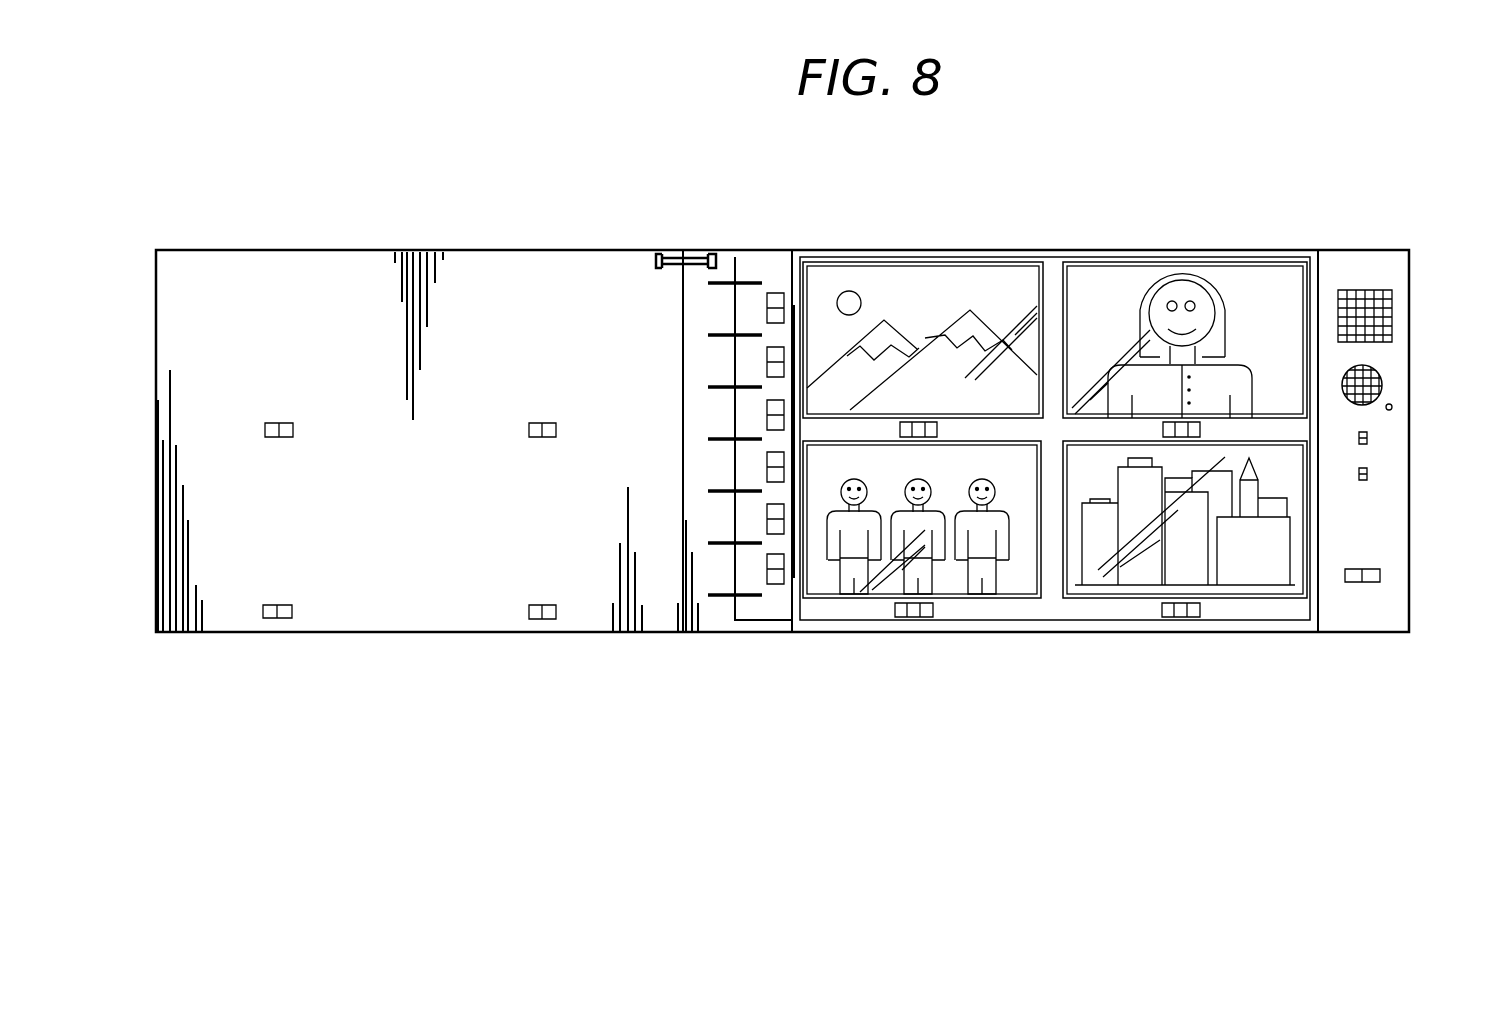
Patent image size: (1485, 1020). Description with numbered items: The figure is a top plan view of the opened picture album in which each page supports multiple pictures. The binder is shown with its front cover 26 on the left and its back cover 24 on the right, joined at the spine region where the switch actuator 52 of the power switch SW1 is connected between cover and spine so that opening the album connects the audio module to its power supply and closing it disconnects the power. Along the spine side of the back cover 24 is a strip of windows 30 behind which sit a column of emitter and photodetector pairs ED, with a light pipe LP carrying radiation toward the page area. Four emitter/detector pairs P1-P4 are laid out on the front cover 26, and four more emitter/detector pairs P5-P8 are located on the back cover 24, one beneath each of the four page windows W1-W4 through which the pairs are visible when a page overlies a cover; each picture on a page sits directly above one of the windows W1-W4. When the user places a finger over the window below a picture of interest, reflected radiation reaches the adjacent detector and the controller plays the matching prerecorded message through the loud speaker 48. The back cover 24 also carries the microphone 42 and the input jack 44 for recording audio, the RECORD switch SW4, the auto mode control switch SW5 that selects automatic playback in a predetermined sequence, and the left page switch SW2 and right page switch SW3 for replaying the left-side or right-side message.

The front cover 26 is at (503, 263).
The switch actuator 52 is at (690, 262).
The power switch SW1 is at (706, 250).
The windows 30 is at (788, 318).
The emitter and photodetector ED is at (521, 454).
The emitter/detector pairs P1-P4 is at (529, 608).
The back cover 24 is at (1318, 252).
The emitter/detector pairs P5-P8 is at (912, 422).
The page windows W1-W4 is at (1160, 430).
The light pipe LP is at (800, 478).
The loud speaker 48 is at (1392, 325).
The microphone 42 is at (1384, 378).
The input jack 44 is at (1393, 407).
The RECORD switch SW4 is at (1367, 438).
The auto mode control switch SW5 is at (1367, 474).
The left page switch SW2 is at (1357, 568).
The right page switch SW3 is at (1380, 580).